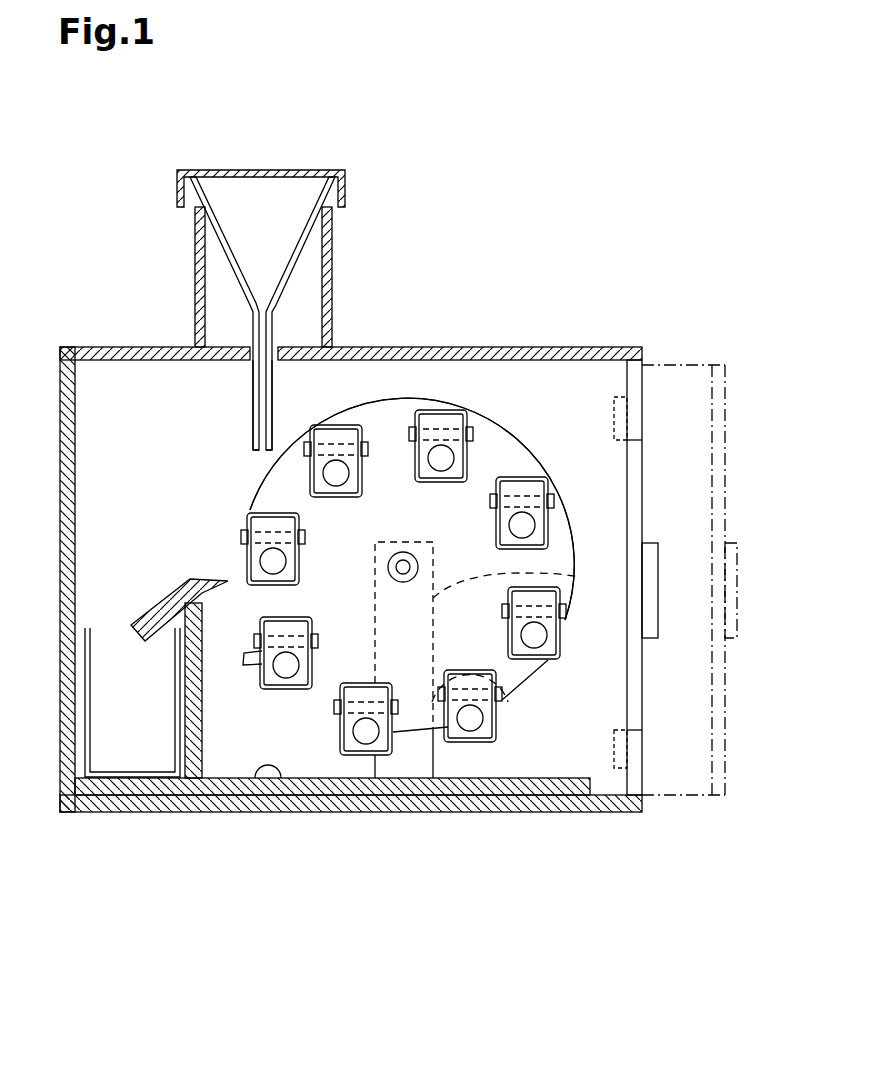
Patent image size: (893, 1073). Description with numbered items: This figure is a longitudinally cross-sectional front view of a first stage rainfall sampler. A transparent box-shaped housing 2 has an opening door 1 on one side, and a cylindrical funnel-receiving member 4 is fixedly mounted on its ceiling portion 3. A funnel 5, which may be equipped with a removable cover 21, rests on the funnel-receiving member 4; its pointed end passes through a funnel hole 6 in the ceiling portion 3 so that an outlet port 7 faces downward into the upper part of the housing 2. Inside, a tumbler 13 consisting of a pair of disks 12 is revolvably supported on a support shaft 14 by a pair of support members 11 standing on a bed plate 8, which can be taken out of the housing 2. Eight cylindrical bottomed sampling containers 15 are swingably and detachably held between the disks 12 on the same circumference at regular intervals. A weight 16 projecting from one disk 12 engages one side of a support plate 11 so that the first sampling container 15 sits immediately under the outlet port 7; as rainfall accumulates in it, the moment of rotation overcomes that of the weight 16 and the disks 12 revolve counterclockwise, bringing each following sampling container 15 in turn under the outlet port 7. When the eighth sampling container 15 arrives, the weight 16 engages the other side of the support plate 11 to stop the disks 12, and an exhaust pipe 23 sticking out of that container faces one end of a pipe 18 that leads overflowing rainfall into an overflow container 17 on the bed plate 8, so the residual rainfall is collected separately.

The opening door 1 is at (643, 462).
The housing 2 is at (520, 335).
The ceiling portion 3 is at (432, 347).
The cylindrical funnel-receiving member 4 is at (332, 272).
The funnel 5 is at (232, 272).
The funnel hole 6 is at (252, 372).
The outlet port 7 is at (248, 453).
The bed plate 8 is at (273, 780).
The support member 11 is at (410, 765).
The disk 12 is at (500, 452).
The tumbler 13 is at (412, 509).
The support shaft 14 is at (403, 578).
The sampling container 15 is at (370, 477).
The weight 16 is at (537, 690).
The overflow container 17 is at (110, 622).
The pipe 18 is at (168, 585).
The removable cover 21 is at (262, 170).
The exhaust pipe 23 is at (248, 670).